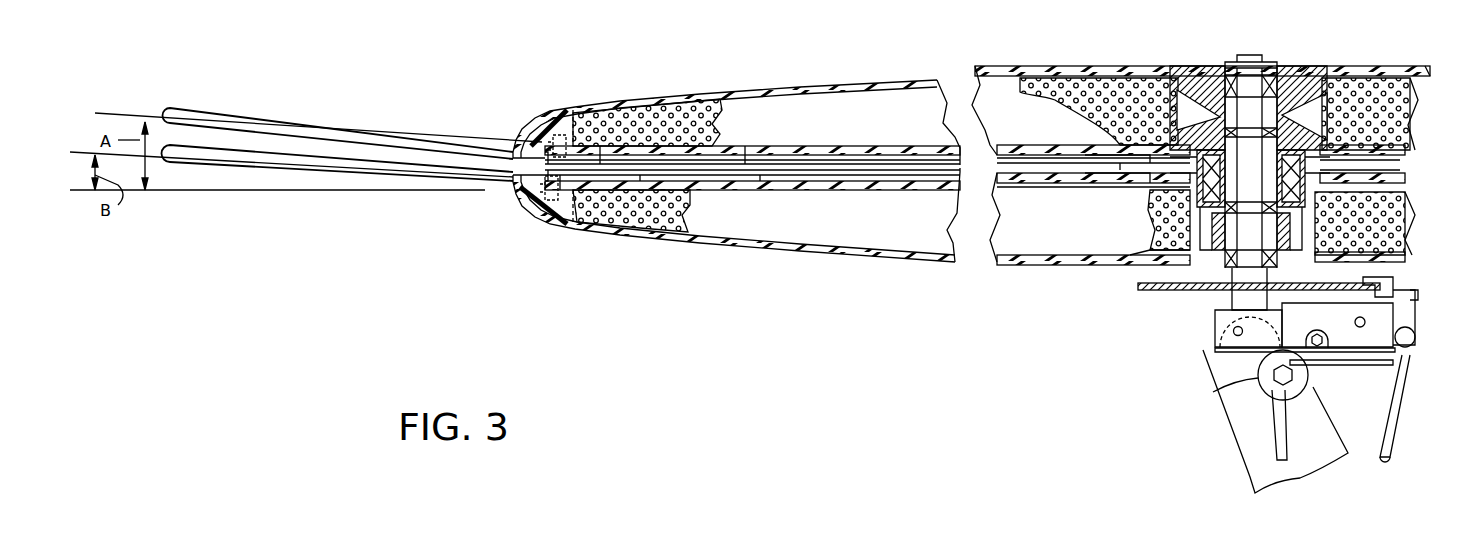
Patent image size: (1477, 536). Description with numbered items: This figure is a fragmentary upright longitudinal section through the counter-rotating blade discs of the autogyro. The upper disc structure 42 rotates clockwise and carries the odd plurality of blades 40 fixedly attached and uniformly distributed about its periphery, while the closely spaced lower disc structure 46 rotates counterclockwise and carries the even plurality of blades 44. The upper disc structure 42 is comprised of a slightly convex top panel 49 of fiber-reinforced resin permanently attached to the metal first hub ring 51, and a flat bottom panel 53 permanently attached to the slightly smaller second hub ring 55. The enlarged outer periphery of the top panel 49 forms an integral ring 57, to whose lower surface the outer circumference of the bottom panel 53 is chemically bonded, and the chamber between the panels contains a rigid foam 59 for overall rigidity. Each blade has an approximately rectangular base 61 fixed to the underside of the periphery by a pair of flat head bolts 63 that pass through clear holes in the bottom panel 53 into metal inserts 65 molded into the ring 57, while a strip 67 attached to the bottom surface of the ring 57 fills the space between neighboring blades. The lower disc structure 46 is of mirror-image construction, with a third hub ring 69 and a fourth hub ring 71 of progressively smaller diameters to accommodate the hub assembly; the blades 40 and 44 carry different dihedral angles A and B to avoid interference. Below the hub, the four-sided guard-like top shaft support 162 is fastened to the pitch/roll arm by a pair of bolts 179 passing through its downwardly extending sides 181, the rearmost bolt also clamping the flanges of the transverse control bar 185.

The odd plurality of blades 40 is at (318, 124).
The upper disc structure 42 is at (548, 110).
The even plurality of blades 44 is at (358, 178).
The lower disc structure 46 is at (550, 239).
The top panel 49 is at (800, 88).
The first hub ring 51 is at (1110, 78).
The bottom panel 53 is at (745, 148).
The second hub ring 55 is at (1095, 148).
The ring 57 is at (558, 119).
The rigid foam 59 is at (668, 110).
The rectangular base 61 is at (513, 157).
The flat head bolts 63 is at (573, 109).
The metal inserts 65 is at (527, 125).
The strip 67 is at (592, 158).
The third hub ring 69 is at (1130, 194).
The fourth hub ring 71 is at (1140, 257).
The top shaft support 162 is at (1395, 283).
The bolts 179 is at (1354, 318).
The downwardly extending sides 181 is at (1373, 340).
The transverse control bar 185 is at (1445, 309).